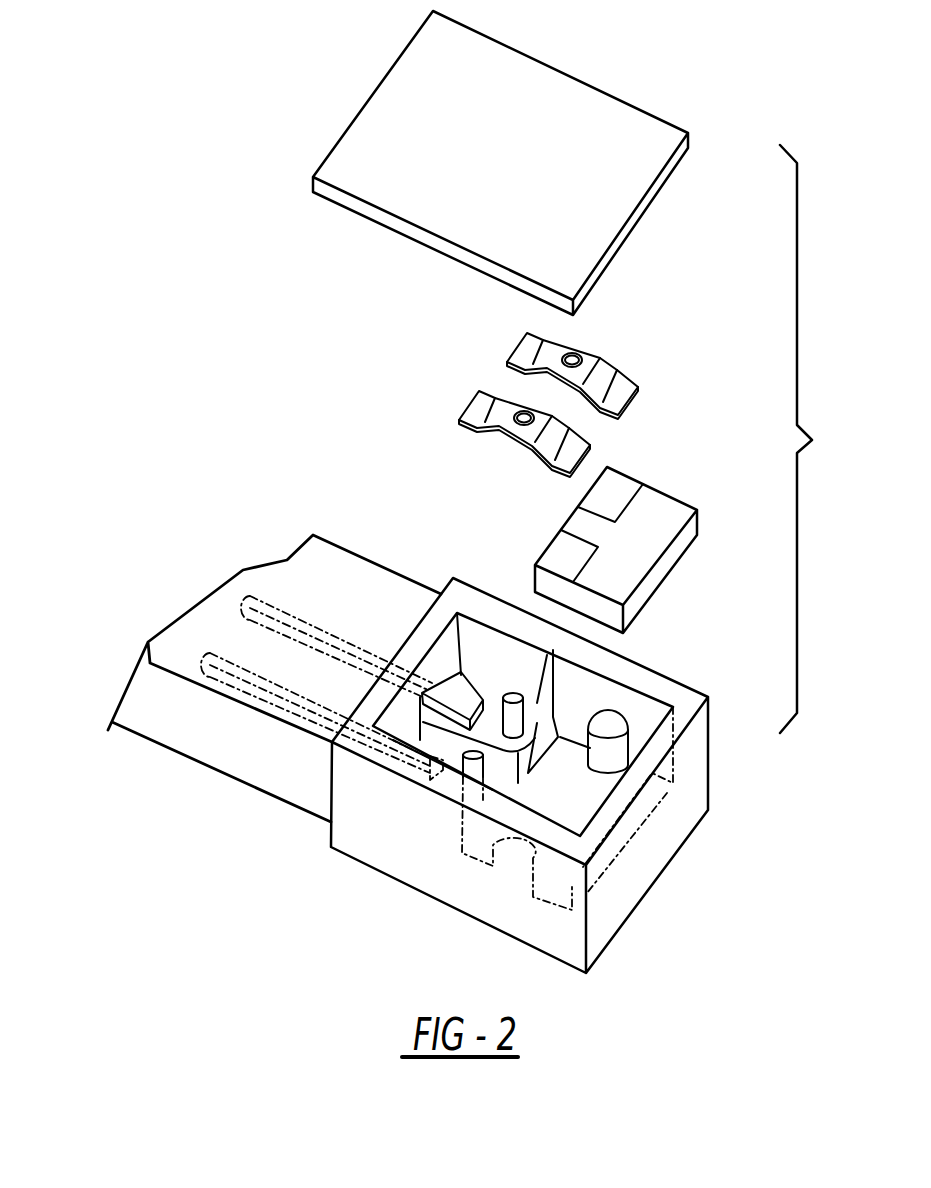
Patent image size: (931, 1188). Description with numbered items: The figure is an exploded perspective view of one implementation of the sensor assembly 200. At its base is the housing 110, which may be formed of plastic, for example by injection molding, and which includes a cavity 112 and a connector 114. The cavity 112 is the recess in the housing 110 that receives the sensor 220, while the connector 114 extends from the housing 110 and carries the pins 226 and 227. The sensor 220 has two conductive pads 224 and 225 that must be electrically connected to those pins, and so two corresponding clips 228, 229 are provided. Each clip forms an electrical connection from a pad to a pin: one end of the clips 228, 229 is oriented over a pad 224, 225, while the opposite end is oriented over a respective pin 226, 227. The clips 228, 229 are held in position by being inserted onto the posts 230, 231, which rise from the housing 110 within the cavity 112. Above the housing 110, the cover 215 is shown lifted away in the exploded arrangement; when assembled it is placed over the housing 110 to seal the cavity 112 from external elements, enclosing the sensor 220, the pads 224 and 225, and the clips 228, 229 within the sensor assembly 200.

The housing 110 is at (643, 683).
The cavity 112 is at (649, 720).
The connector 114 is at (327, 572).
The sensor assembly 200 is at (195, 163).
The cover 215 is at (588, 107).
The sensor 220 is at (631, 523).
The conductive pad 224 is at (565, 555).
The conductive pad 225 is at (612, 488).
The pin 226 is at (325, 637).
The pin 227 is at (297, 697).
The clip 228 is at (607, 378).
The clip 229 is at (493, 413).
The post 230 is at (513, 693).
The post 231 is at (473, 757).